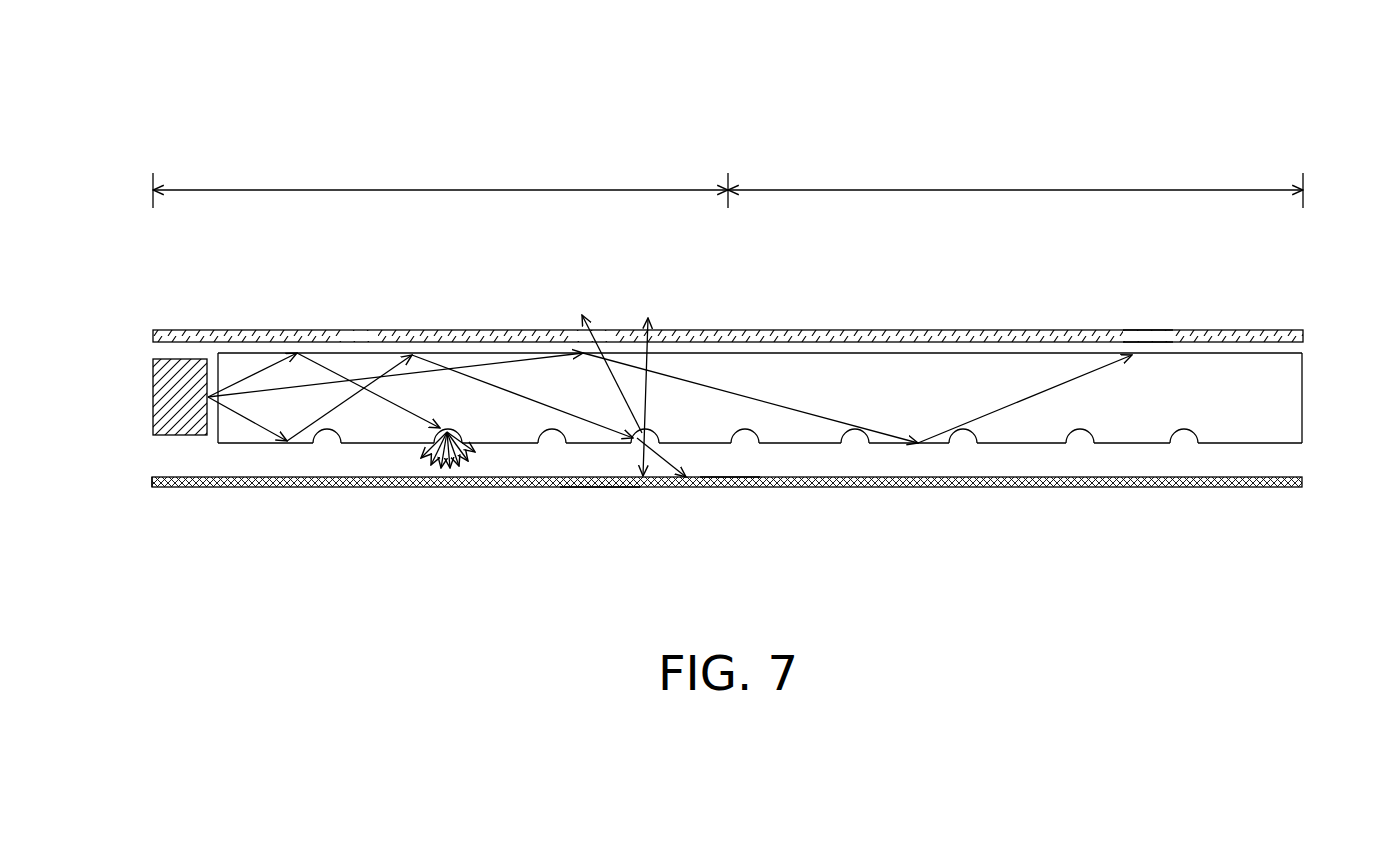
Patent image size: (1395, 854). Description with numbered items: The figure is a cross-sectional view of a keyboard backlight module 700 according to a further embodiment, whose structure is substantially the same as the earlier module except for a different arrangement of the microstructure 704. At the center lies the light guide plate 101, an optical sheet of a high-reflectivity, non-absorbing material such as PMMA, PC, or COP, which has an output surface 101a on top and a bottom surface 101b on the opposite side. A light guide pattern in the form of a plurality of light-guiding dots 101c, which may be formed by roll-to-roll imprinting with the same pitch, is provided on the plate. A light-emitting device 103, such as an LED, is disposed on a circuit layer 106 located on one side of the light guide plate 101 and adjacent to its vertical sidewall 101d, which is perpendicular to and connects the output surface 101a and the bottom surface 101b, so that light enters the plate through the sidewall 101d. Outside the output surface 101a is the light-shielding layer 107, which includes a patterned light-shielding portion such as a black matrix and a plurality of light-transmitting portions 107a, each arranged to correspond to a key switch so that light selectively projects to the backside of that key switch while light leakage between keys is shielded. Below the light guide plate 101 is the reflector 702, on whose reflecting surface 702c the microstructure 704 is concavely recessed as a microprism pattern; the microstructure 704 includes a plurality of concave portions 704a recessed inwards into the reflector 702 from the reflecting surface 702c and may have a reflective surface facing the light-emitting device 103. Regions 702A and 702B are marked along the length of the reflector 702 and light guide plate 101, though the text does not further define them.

The keyboard backlight module 700 is at (120, 75).
The first region of reflective sheet 702A is at (440, 183).
The second region of reflective sheet 702B is at (1015, 183).
The light guide plate 101 is at (1285, 398).
The output surface 101a is at (1235, 352).
The bottom surface 101b is at (1266, 443).
The light-guiding dots 101c is at (1080, 427).
The sidewall 101d is at (217, 433).
The light-emitting device 103 is at (182, 370).
The circuit layer 106 is at (147, 393).
The light-shielding layer 107 is at (1303, 336).
The light-transmitting portion 107a is at (1152, 335).
The reflector 702 is at (1245, 488).
The reflecting surface 702c is at (167, 475).
The microstructure 704 is at (603, 481).
The concave portion 704a is at (722, 473).